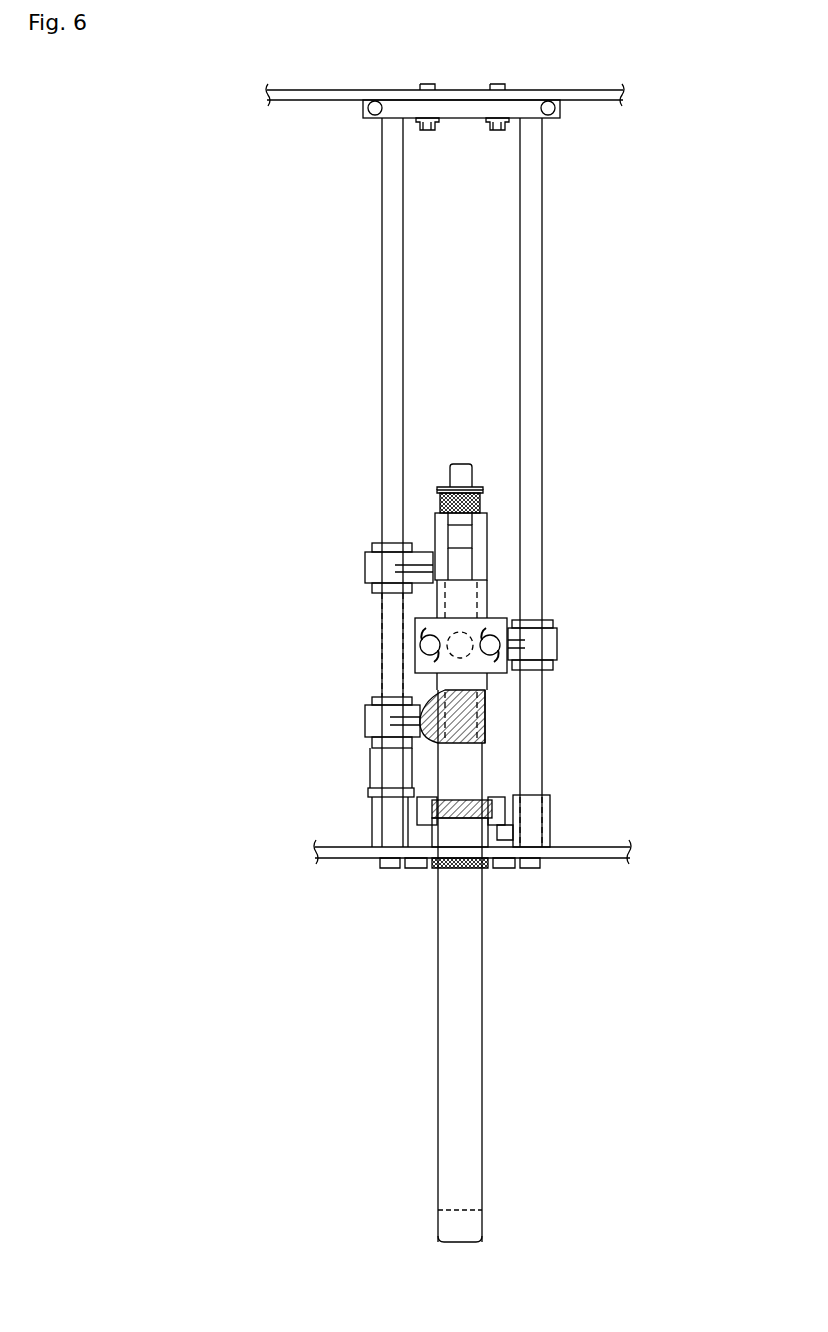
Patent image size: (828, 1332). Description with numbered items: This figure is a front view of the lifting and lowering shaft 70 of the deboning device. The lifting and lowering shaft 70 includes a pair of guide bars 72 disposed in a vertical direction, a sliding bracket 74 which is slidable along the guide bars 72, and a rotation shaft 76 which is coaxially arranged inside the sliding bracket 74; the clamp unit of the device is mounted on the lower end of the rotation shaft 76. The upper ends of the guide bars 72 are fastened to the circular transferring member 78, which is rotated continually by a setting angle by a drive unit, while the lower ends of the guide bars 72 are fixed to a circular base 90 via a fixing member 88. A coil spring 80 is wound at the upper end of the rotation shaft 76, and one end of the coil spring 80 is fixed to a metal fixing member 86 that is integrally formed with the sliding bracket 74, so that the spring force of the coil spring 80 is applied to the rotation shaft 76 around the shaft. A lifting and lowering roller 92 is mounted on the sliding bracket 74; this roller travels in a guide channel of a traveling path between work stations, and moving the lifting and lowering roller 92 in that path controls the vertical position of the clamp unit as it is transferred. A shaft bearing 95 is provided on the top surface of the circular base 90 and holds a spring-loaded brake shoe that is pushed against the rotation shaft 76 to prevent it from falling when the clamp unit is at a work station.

The lifting and lowering shaft 70 is at (555, 487).
The guide bars 72 is at (520, 346).
The sliding bracket 74 is at (365, 560).
The rotation shaft 76 is at (483, 1014).
The circular transferring member 78 is at (310, 92).
The coil spring 80 is at (432, 510).
The metal fixing member 86 is at (447, 535).
The fixing member 88 is at (530, 812).
The circular base 90 is at (344, 860).
The lifting and lowering roller 92 is at (465, 633).
The shaft bearing 95 is at (490, 800).